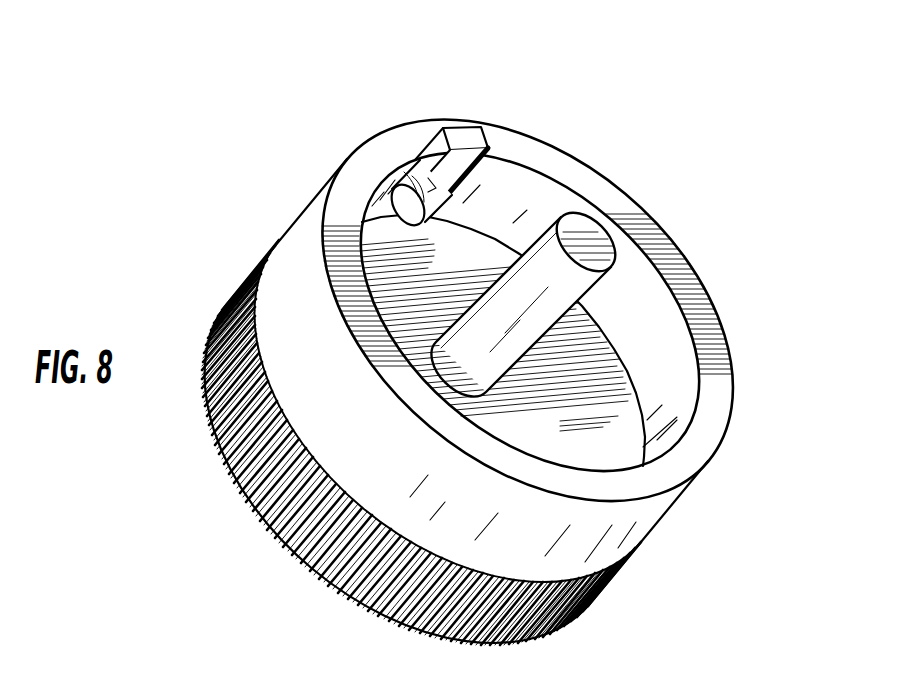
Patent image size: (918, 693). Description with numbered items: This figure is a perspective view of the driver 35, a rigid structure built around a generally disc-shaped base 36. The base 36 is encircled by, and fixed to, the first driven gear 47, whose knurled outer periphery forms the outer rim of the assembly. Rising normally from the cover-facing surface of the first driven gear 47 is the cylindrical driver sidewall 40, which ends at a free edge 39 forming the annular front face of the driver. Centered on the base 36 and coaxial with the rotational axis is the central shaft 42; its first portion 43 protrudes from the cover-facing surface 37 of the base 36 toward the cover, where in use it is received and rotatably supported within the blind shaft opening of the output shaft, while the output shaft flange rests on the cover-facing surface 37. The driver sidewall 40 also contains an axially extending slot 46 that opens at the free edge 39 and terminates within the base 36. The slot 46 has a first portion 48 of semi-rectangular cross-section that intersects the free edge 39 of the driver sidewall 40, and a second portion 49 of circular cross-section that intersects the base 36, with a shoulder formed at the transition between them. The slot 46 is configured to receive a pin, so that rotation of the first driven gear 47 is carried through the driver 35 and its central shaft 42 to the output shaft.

The driver 35 is at (256, 133).
The base 36 is at (600, 412).
The cover-facing surface 37 is at (580, 353).
The free edge 39 is at (642, 225).
The driver sidewall 40 is at (590, 527).
The central shaft 42 is at (517, 261).
The first portion of the central shaft 43 is at (524, 311).
The slot 46 is at (434, 186).
The first driven gear 47 is at (317, 563).
The slot first portion 48 is at (438, 130).
The slot second portion 49 is at (432, 185).